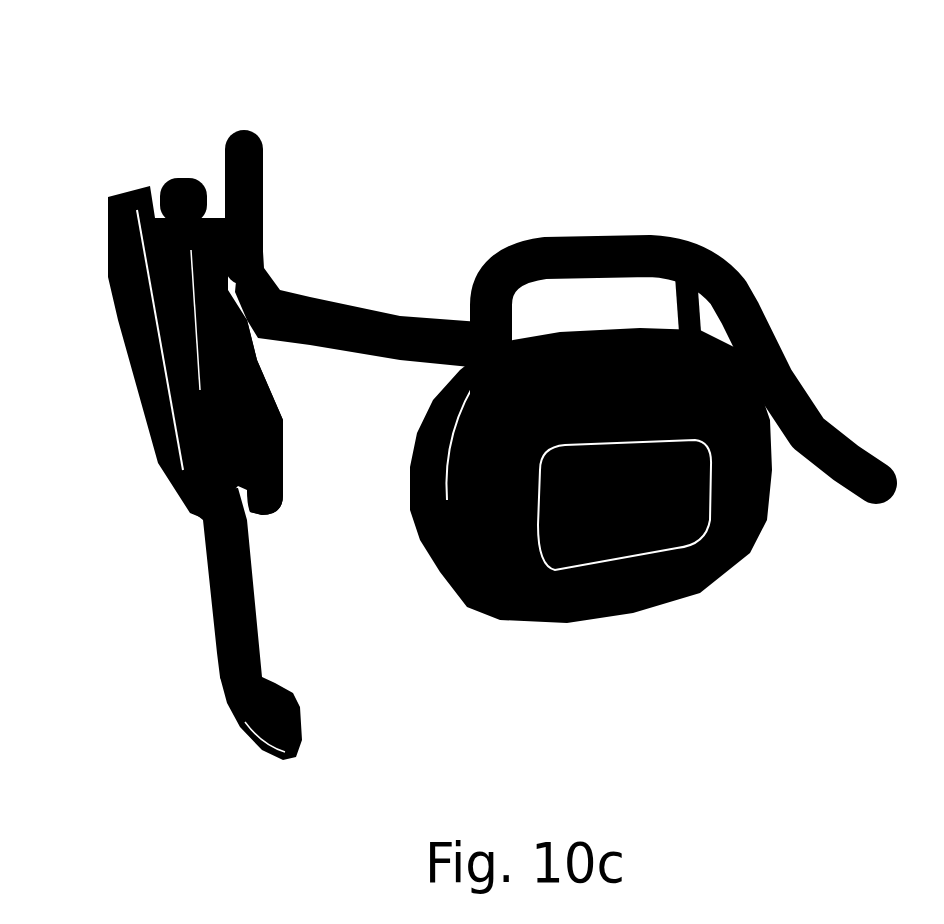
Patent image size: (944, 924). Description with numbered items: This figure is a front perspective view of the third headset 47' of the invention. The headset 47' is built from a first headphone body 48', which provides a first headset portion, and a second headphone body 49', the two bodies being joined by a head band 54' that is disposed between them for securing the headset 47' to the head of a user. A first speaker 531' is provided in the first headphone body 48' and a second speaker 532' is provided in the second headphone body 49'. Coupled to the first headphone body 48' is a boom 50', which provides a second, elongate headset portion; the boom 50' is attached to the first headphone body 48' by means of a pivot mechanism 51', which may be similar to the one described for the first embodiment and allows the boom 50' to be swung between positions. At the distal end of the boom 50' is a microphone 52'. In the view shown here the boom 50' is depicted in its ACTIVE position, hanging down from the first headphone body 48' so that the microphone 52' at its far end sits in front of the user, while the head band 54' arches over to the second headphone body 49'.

The third headset 47' is at (176, 142).
The first headphone body 48' is at (153, 349).
The second headphone body 49' is at (631, 475).
The boom 50' is at (180, 594).
The pivot mechanism 51' is at (157, 548).
The microphone 52' is at (330, 716).
The first speaker 531' is at (320, 407).
The second speaker 532' is at (683, 276).
The head band 54' is at (357, 265).